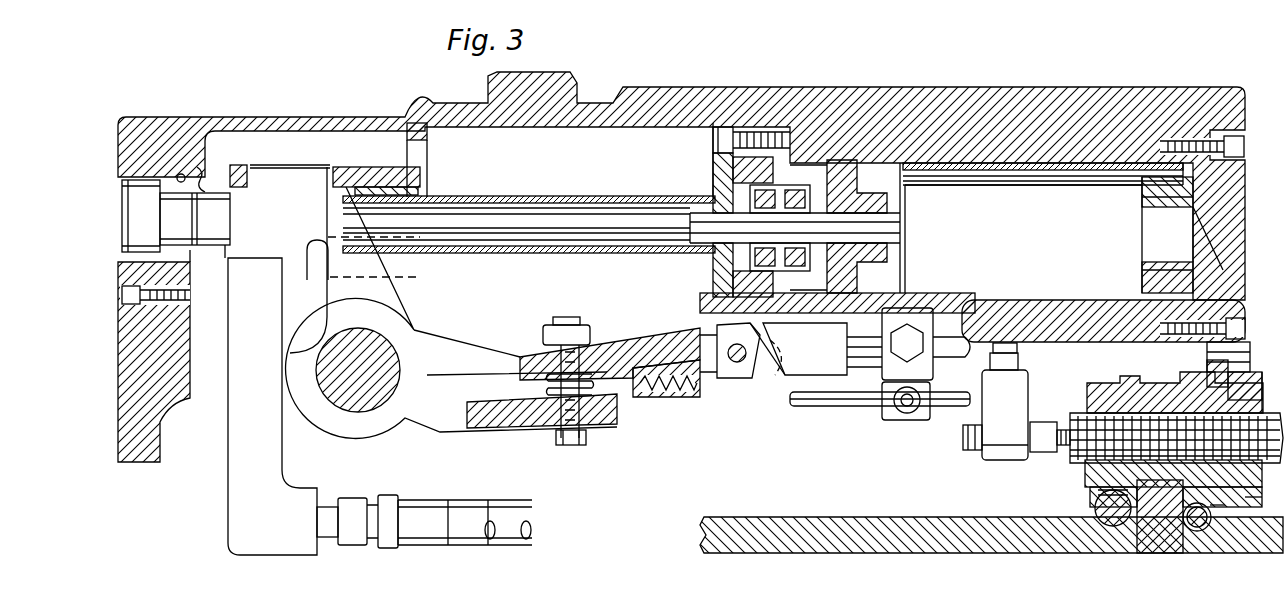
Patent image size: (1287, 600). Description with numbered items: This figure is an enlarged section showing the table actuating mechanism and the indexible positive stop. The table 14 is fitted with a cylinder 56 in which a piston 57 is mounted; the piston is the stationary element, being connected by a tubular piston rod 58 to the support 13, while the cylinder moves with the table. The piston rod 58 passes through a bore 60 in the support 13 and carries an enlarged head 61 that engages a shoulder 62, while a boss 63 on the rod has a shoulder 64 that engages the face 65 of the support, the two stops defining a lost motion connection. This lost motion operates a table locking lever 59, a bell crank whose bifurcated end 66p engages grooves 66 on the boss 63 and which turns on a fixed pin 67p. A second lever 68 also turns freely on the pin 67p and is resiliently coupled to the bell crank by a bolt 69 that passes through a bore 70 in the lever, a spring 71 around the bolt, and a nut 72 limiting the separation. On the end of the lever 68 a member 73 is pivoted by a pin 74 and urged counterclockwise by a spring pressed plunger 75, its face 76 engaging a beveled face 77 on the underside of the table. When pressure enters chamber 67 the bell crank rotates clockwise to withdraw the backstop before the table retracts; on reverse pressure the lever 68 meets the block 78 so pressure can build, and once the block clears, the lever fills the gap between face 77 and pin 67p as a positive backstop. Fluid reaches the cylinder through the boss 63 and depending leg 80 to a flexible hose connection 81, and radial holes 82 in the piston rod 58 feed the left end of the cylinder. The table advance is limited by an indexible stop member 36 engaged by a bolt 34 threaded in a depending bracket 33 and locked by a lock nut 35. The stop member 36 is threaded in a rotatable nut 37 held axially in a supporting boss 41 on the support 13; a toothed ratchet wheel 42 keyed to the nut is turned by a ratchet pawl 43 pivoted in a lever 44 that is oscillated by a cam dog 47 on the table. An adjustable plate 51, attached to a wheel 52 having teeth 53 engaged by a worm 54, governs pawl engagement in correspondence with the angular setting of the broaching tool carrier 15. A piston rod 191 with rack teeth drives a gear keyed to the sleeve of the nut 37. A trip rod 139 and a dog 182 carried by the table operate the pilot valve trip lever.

The support 13 is at (300, 100).
The table 14 is at (1163, 78).
The broaching tool carrier 15 is at (1202, 151).
The depending bracket 33 is at (982, 460).
The bolt 34 is at (1063, 420).
The lock nut 35 is at (1040, 420).
The indexible stop member 36 is at (1075, 460).
The rotatable nut 37 is at (1262, 400).
The supporting boss 41 is at (1160, 378).
The toothed ratchet wheel 42 is at (1212, 508).
The ratchet pawl 43 is at (1207, 358).
The lever 44 is at (1260, 510).
The cam dog 47 is at (1250, 320).
The adjustable plate 51 is at (1207, 370).
The wheel 52 is at (1140, 500).
The teeth 53 is at (1172, 492).
The worm 54 is at (1192, 532).
The cylinder 56 is at (1032, 163).
The piston 57 is at (838, 160).
The piston rod 58 is at (630, 182).
The table locking lever 59 is at (400, 312).
The bore 60 is at (190, 263).
The enlarged head 61 is at (140, 217).
The shoulder 62 is at (183, 174).
The boss 63 is at (300, 156).
The shoulder 64 is at (236, 165).
The face 65 is at (208, 190).
The grooves 66 is at (327, 167).
The bifurcated end 66p is at (340, 218).
The chamber 67 is at (780, 127).
The fixed pin 67p is at (367, 400).
The lever 68 is at (650, 372).
The bolt 69 is at (575, 445).
The bore 70 is at (586, 348).
The spring 71 is at (552, 388).
The nut 72 is at (570, 322).
The member 73 is at (500, 181).
The pin 74 is at (715, 335).
The spring pressed plunger 75 is at (717, 390).
The face 76 is at (760, 385).
The beveled face 77 is at (773, 385).
The block 78 is at (826, 370).
The depending leg 80 is at (228, 404).
The flexible hose connection 81 is at (472, 530).
The radial holes 82 is at (815, 242).
The trip rod 139 is at (852, 400).
The dog 182 is at (883, 408).
The piston rod 191 is at (1108, 525).